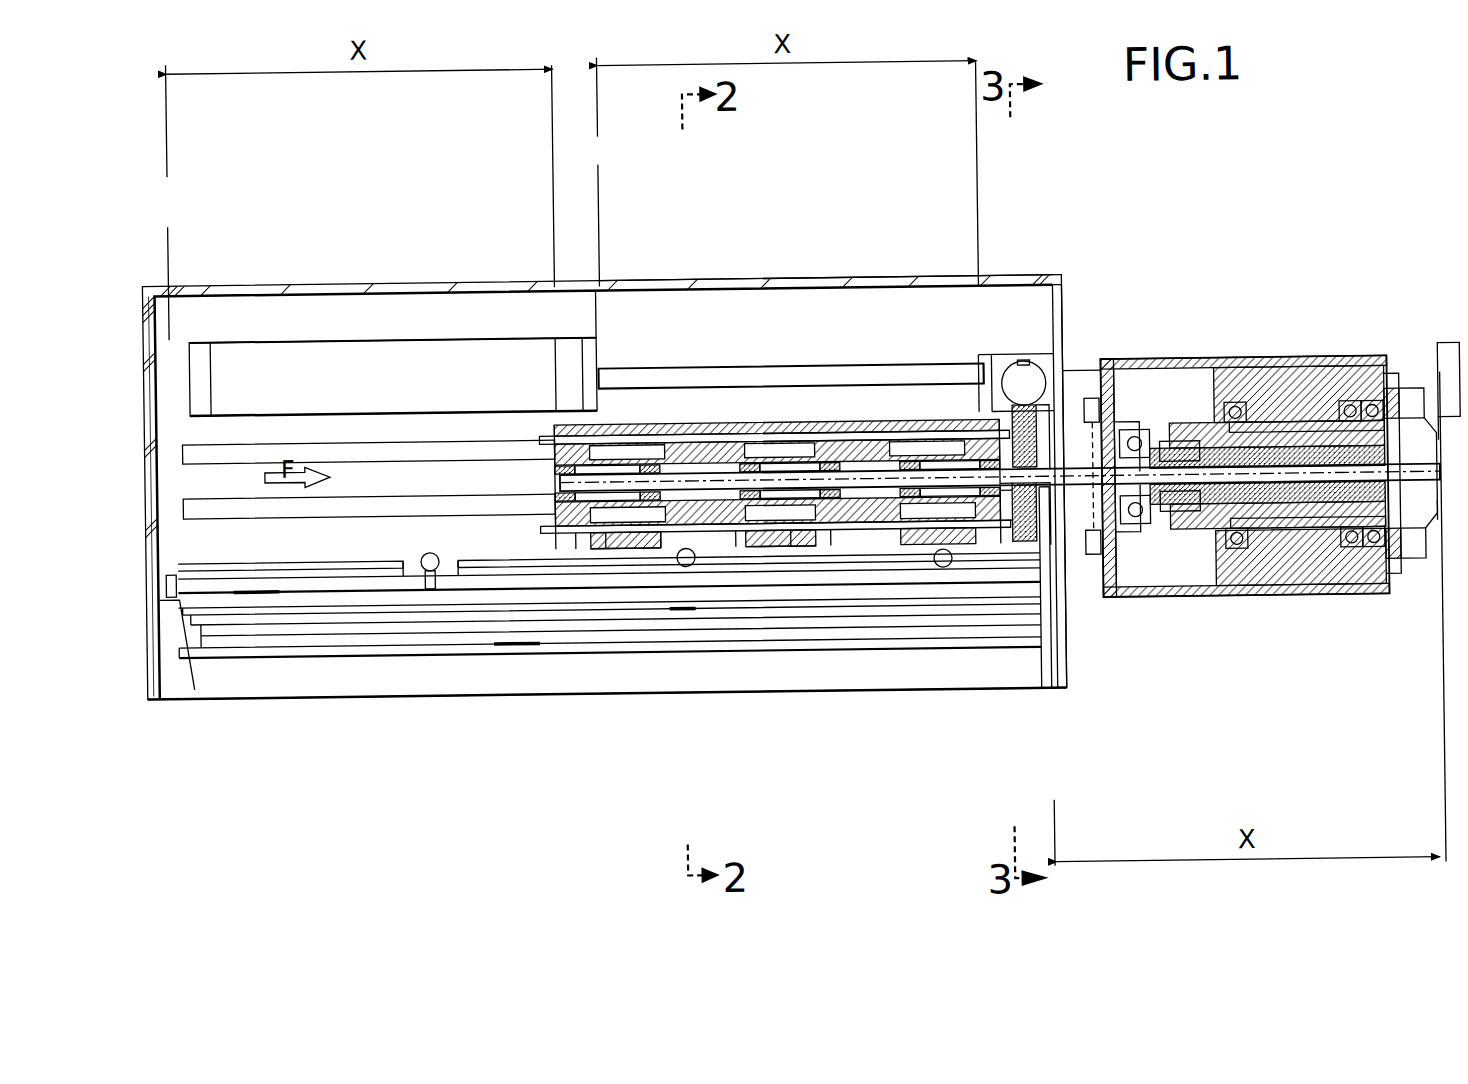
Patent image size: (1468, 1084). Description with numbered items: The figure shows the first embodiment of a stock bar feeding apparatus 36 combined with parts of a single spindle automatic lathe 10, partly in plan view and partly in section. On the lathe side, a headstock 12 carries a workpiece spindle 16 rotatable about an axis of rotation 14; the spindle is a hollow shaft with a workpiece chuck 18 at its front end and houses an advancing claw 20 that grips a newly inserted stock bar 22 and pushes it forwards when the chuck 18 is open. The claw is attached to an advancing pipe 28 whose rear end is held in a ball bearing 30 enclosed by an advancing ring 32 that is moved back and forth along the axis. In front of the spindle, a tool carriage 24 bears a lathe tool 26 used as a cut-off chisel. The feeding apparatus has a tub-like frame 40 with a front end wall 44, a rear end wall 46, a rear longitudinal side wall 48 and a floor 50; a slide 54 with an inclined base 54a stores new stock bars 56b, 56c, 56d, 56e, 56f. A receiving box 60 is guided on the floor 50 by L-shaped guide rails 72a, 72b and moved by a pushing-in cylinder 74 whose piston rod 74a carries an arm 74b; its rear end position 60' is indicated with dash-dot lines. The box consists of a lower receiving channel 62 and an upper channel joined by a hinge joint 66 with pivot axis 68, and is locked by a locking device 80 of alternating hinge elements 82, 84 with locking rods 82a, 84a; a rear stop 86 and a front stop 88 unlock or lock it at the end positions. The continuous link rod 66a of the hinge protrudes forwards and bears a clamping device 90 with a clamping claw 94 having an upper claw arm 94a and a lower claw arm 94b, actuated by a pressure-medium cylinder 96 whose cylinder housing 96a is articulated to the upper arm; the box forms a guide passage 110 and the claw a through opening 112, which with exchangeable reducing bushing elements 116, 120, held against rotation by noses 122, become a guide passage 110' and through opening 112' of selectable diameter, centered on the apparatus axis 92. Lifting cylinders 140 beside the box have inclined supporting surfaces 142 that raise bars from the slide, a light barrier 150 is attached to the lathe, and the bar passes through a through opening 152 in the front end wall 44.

The single spindle automatic lathe 10 is at (1354, 339).
The headstock 12 is at (1307, 364).
The axis of rotation 14 is at (1283, 470).
The workpiece spindle 16 is at (1309, 549).
The workpiece chuck 18 is at (1405, 513).
The advancing claw 20 is at (1358, 537).
The stock bar 22 is at (1279, 536).
The tool carriage 24 is at (1438, 358).
The lathe tool 26 is at (1438, 493).
The advancing pipe 28 is at (1259, 538).
The ball bearing 30 is at (1177, 363).
The advancing ring 32 is at (1149, 597).
The stock bar feeding apparatus 36 is at (660, 267).
The frame 40 is at (780, 284).
The front end wall 44 is at (1060, 353).
The rear end wall 46 is at (152, 282).
The rear longitudinal side wall 48 is at (264, 283).
The floor 50 is at (315, 310).
The slide 54 is at (207, 664).
The inclined base 54a is at (259, 683).
The stock bar 56b is at (332, 579).
The stock bar 56c is at (346, 597).
The stock bar 56d is at (358, 607).
The stock bar 56e is at (376, 624).
The stock bar 56f is at (393, 643).
The receiving box 60 is at (746, 330).
The rear end position of receiving box 60' is at (199, 283).
The lower receiving channel 62 is at (558, 465).
The hinge joint 66 is at (602, 287).
The link rod 66a is at (1087, 364).
The pivot axis 68 is at (634, 288).
The longitudinal guide rail 72a is at (341, 439).
The longitudinal guide rail 72b is at (340, 509).
The pushing-in cylinder 74 is at (427, 330).
The piston rod 74a is at (694, 366).
The arm 74b is at (961, 392).
The locking device 80 is at (549, 537).
The hinge element 82 is at (585, 544).
The locking rod 82a is at (579, 544).
The hinge element 84 is at (659, 545).
The locking rod 84a is at (604, 544).
The rear stop 86 is at (172, 537).
The front stop 88 is at (1064, 604).
The clamping device 90 is at (991, 398).
The axis of the feeding apparatus 92 is at (1014, 461).
The clamping claw 94 is at (1015, 523).
The upper claw arm 94a is at (1061, 433).
The lower claw arm 94b is at (1000, 523).
The pressure-medium cylinder 96 is at (1033, 362).
The cylinder housing 96a is at (1018, 362).
The guide passage 110 is at (775, 340).
The guide passage 110' is at (775, 339).
The through opening 112 is at (971, 559).
The through opening 112' is at (964, 498).
The reducing bushing element 116 is at (736, 461).
The reducing bushing element 120 is at (1042, 695).
The nose 122 is at (840, 466).
The lifting cylinder 140 is at (427, 574).
The supporting surface 142 is at (439, 565).
The light barrier 150 is at (1132, 362).
The through opening 152 is at (1097, 564).